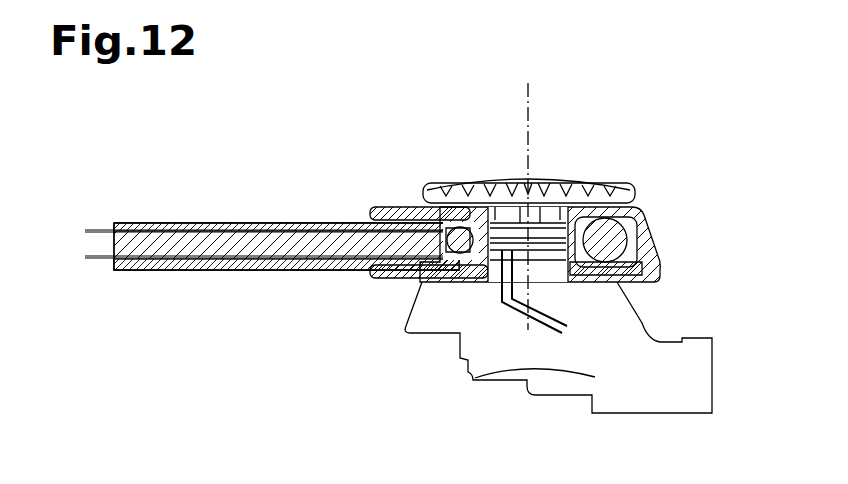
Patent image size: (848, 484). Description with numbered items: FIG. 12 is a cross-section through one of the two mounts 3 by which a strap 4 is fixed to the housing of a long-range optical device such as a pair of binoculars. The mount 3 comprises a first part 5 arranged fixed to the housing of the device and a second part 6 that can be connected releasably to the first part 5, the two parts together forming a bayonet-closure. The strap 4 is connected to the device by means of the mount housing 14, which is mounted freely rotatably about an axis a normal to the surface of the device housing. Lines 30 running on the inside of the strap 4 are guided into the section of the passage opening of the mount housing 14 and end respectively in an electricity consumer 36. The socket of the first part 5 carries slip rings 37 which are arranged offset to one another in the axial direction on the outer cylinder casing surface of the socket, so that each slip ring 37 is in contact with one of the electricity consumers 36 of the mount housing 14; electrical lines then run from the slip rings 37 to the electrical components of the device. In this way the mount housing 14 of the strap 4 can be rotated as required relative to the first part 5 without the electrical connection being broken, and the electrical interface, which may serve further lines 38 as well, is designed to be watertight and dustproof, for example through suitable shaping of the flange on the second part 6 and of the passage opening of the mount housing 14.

The mount 3 is at (657, 210).
The strap 4 is at (183, 158).
The first part 5 is at (657, 308).
The second part 6 is at (485, 153).
The mount housing 14 is at (385, 282).
The lines 30 is at (100, 228).
The electricity consumer 36 is at (470, 245).
The slip ring 37 is at (597, 200).
The lines 38 is at (515, 320).
The axis a is at (532, 112).